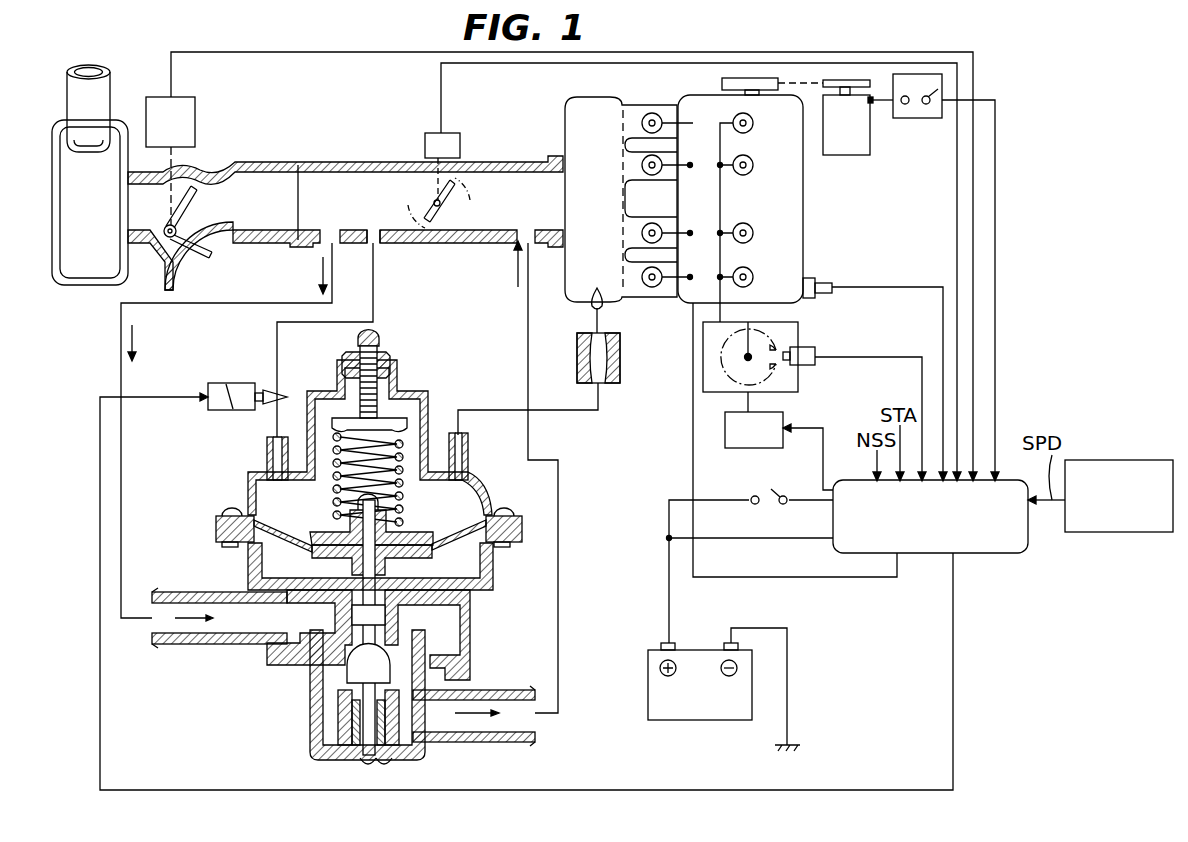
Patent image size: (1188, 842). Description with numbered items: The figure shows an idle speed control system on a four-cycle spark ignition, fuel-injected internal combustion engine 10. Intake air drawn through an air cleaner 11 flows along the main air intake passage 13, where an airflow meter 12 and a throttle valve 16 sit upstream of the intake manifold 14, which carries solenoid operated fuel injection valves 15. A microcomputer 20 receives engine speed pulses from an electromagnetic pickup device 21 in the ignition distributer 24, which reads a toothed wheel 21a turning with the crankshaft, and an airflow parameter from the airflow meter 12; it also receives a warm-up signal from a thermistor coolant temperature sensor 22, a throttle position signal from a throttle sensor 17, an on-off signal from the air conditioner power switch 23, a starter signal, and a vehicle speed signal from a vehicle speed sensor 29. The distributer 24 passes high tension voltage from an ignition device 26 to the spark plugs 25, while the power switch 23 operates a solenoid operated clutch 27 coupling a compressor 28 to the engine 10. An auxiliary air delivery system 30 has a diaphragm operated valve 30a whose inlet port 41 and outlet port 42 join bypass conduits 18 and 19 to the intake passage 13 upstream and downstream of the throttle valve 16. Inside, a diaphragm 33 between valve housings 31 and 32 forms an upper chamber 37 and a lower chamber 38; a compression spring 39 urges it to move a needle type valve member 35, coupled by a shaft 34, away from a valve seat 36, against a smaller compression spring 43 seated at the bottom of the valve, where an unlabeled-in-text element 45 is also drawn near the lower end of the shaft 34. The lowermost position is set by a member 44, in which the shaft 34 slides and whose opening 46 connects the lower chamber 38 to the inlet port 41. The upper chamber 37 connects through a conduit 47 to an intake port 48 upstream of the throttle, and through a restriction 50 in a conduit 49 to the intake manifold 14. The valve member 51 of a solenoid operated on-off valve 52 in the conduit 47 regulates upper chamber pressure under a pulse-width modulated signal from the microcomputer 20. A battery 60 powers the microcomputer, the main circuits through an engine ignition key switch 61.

The internal combustion engine 10 is at (805, 219).
The air cleaner 11 is at (80, 286).
The airflow meter 12 is at (195, 120).
The main air intake passage 13 is at (352, 162).
The intake manifold 14 is at (563, 104).
The fuel injection valves 15 is at (648, 287).
The throttle valve 16 is at (444, 210).
The throttle sensor 17 is at (450, 132).
The bypass conduit 18 is at (123, 445).
The bypass conduit 19 is at (526, 320).
The microcomputer 20 is at (990, 554).
The electromagnetic pickup device 21 is at (816, 348).
The toothed wheel 21a is at (776, 347).
The thermistor coolant temperature sensor 22 is at (824, 280).
The air conditioner power switch 23 is at (920, 120).
The ignition distributer 24 is at (800, 385).
The spark plugs 25 is at (748, 114).
The ignition device 26 is at (752, 449).
The solenoid operated clutch 27 is at (872, 102).
The compressor 28 is at (848, 156).
The vehicle speed sensor 29 is at (1118, 459).
The auxiliary air delivery system 30 is at (190, 726).
The diaphragm operated valve 30a is at (268, 660).
The valve housing 31 is at (248, 478).
The valve housing 32 is at (214, 530).
The diaphragm 33 is at (283, 528).
The shaft 34 is at (390, 612).
The valve member 35 is at (393, 673).
The valve seat 36 is at (310, 688).
The upper chamber 37 is at (470, 492).
The lower chamber 38 is at (488, 562).
The compression spring 39 is at (400, 460).
The inlet port 41 is at (190, 646).
The outlet port 42 is at (470, 744).
The compression spring 43 is at (338, 726).
The member 44 is at (252, 575).
The retainer pin 45 is at (378, 760).
The opening 46 is at (470, 600).
The conduit 47 is at (375, 300).
The intake port 48 is at (371, 245).
The conduit 49 is at (488, 410).
The restriction 50 is at (622, 355).
The valve member 51 is at (272, 385).
The solenoid operated on-off valve 52 is at (229, 411).
The battery 60 is at (647, 683).
The engine ignition key switch 61 is at (774, 492).